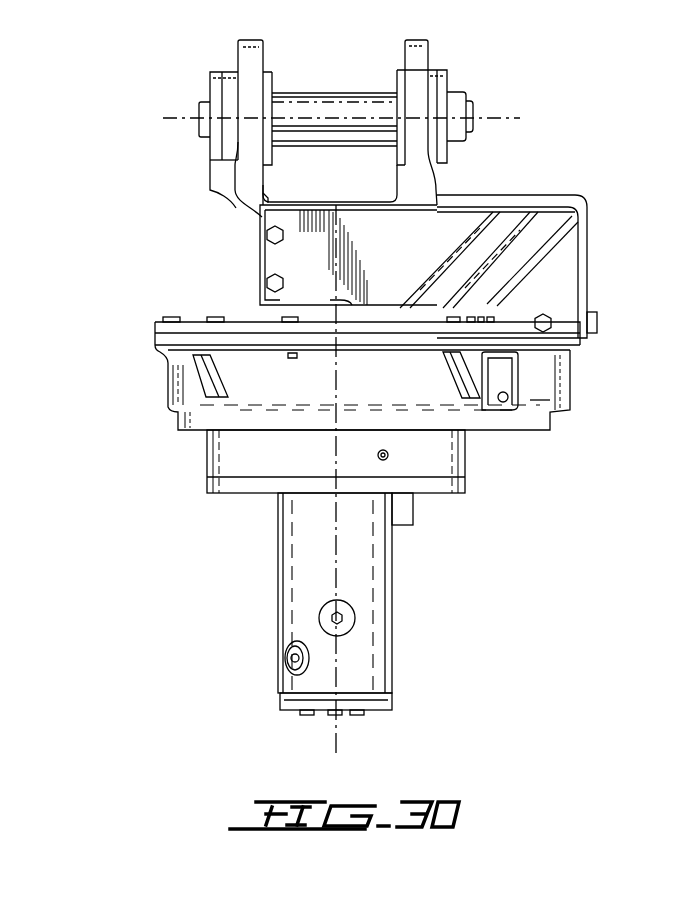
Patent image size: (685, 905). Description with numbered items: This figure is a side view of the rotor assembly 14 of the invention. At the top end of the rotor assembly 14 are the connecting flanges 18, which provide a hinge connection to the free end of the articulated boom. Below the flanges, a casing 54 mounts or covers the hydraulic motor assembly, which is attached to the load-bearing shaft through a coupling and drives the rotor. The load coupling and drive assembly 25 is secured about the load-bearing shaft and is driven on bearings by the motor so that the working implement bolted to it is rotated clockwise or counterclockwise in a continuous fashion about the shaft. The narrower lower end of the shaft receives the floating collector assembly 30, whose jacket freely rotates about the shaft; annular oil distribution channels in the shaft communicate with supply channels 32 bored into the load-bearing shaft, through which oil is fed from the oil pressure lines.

The rotor assembly 14 is at (183, 230).
The connecting flanges 18 is at (252, 93).
The load coupling and drive assembly 25 is at (438, 462).
The floating collector assembly 30 is at (302, 555).
The supply channels 32 is at (355, 618).
The casing 54 is at (522, 252).